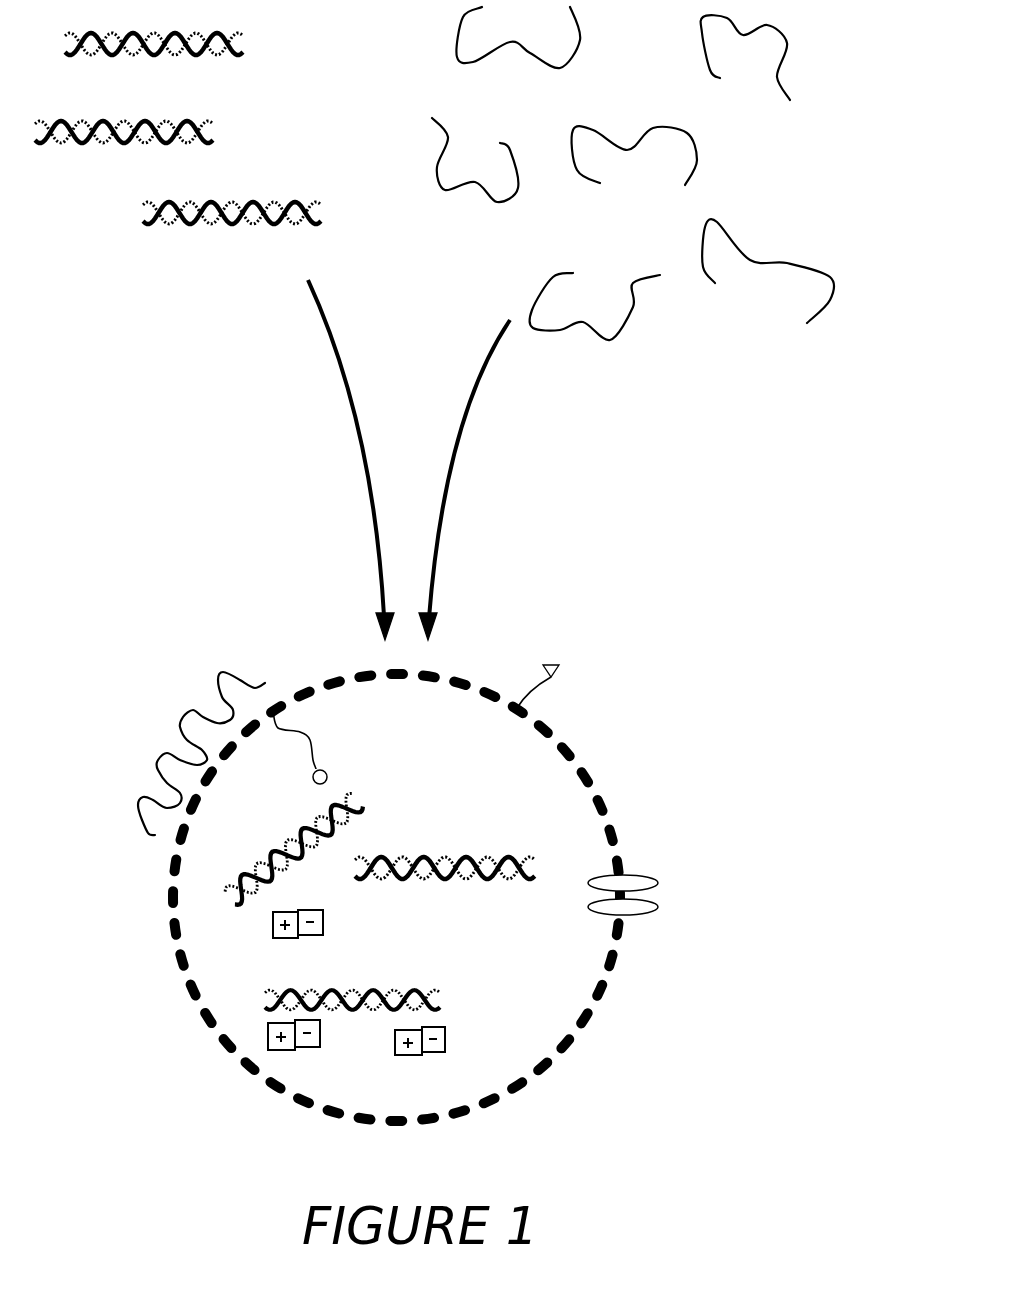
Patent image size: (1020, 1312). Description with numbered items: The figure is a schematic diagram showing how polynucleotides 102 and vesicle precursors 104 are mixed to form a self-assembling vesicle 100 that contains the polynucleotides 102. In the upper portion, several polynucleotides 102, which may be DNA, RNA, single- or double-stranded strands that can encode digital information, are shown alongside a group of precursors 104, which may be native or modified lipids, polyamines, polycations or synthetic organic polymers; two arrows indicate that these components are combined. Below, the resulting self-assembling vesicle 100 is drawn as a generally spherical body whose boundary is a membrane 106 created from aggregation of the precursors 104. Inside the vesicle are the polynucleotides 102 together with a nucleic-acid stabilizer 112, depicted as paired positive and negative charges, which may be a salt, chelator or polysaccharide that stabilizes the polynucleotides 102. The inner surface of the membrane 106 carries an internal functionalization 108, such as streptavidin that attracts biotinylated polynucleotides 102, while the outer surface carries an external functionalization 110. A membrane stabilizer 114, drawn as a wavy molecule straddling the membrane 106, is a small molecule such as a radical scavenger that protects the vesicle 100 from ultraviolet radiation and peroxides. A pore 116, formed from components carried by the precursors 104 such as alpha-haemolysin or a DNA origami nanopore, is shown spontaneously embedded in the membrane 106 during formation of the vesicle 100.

The self-assembling vesicle 100 is at (455, 927).
The polynucleotides 102 is at (302, 521).
The precursors 104 is at (633, 203).
The membrane 106 is at (568, 1059).
The internal functionalization 108 is at (326, 738).
The external functionalization 110 is at (629, 677).
The nucleic-acid stabilizer 112 is at (370, 993).
The membrane stabilizer 114 is at (166, 753).
The pore 116 is at (647, 881).